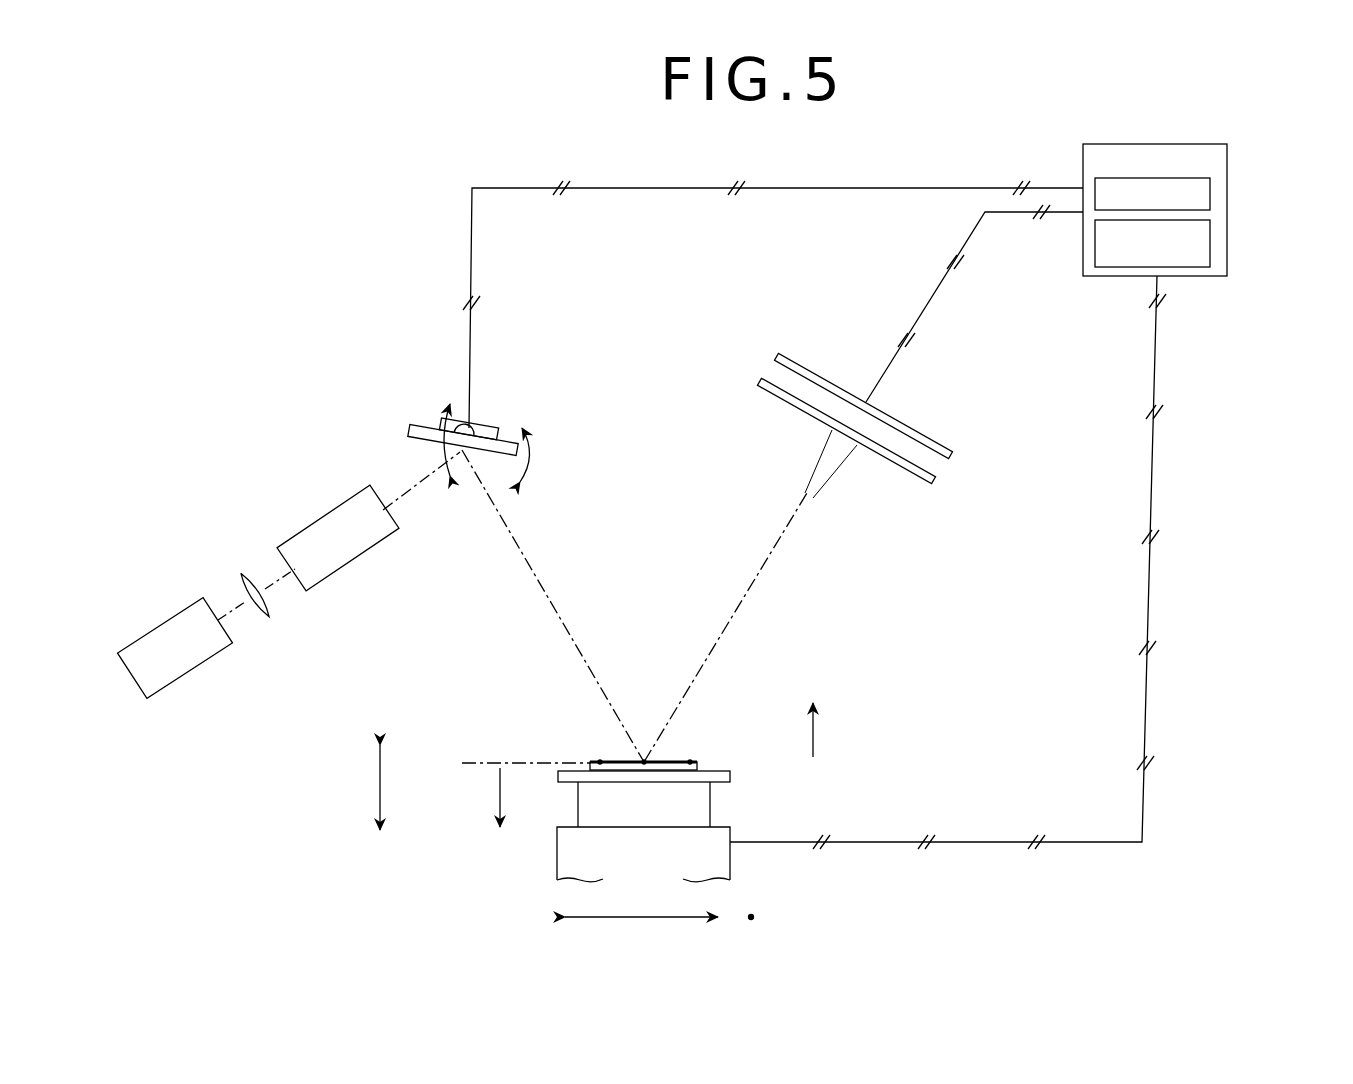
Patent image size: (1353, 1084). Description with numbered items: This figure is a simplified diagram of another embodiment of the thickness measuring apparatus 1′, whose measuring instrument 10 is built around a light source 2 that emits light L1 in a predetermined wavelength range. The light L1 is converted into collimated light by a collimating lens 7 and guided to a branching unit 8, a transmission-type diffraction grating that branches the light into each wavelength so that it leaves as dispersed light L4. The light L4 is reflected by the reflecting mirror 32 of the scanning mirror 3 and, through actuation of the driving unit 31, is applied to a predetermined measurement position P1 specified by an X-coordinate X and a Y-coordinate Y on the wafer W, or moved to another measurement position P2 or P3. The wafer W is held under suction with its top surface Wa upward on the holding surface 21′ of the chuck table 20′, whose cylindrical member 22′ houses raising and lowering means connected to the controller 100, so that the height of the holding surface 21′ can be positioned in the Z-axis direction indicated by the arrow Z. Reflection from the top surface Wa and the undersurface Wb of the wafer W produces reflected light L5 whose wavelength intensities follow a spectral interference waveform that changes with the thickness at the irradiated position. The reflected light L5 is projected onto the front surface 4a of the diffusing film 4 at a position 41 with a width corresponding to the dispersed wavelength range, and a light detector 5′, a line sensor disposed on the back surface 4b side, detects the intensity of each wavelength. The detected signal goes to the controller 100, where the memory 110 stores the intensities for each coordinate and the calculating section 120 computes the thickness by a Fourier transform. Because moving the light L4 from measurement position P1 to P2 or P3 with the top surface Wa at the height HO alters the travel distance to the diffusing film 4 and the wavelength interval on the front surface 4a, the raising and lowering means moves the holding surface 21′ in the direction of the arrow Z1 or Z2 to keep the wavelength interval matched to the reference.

The controller 100 is at (1143, 144).
The memory 110 is at (1210, 198).
The calculating section 120 is at (1210, 250).
The thickness measuring apparatus 1′ is at (236, 320).
The light source 2 is at (150, 624).
The collimating lens 7 is at (270, 612).
The branching unit 8 is at (352, 558).
The scanning mirror 3 is at (493, 416).
The driving unit 31 is at (440, 426).
The reflecting mirror 32 is at (497, 458).
The measuring instrument 10 is at (550, 400).
The diffusing film 4 is at (876, 443).
The front surface 4a is at (910, 483).
The back surface 4b is at (930, 474).
The position 41 is at (840, 443).
The light detector 5′ is at (925, 438).
The light L1 is at (233, 608).
The light L4 is at (412, 490).
The reflected light L5 is at (750, 594).
The chuck table 20′ is at (643, 798).
The holding surface 21′ is at (700, 770).
The cylindrical member 22′ is at (722, 862).
The wafer W is at (702, 755).
The top surface Wa is at (616, 760).
The undersurface Wb is at (687, 776).
The measurement position P1 is at (646, 761).
The measurement position P2 is at (599, 760).
The measurement position P3 is at (691, 760).
The height HO is at (510, 763).
The arrow Z1 is at (498, 798).
The arrow Z2 is at (815, 741).
The arrow Z is at (367, 787).
The X-coordinate X is at (641, 935).
The Y-coordinate Y is at (748, 934).